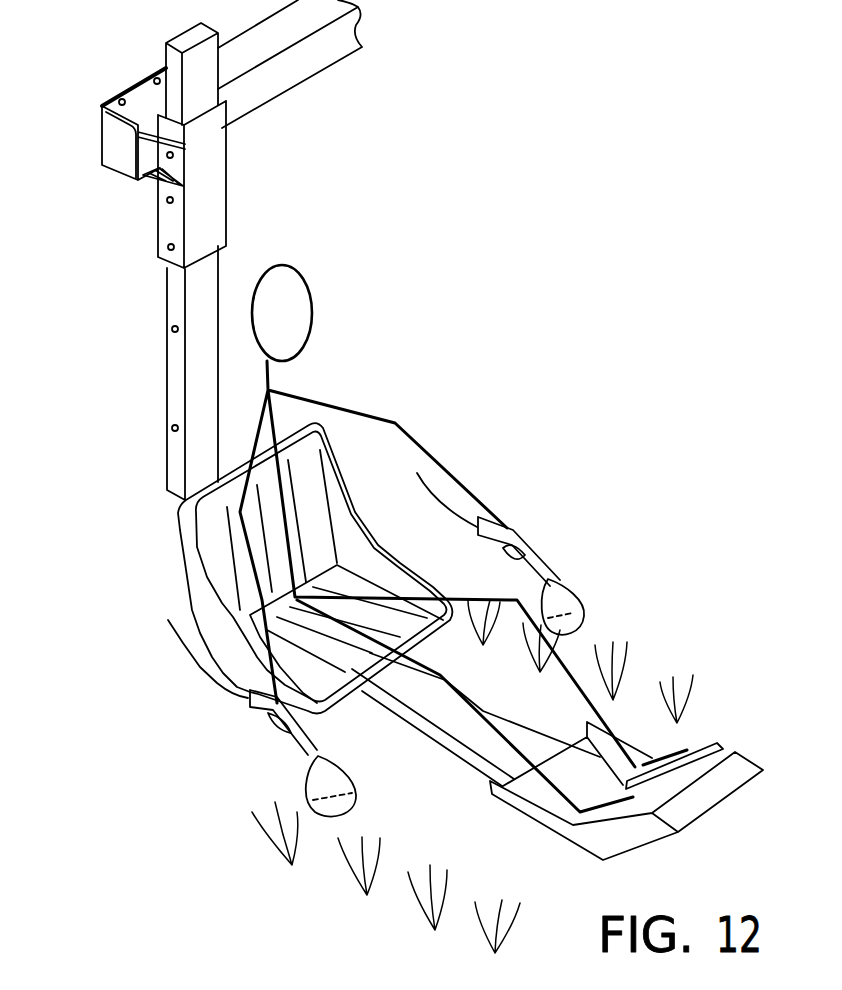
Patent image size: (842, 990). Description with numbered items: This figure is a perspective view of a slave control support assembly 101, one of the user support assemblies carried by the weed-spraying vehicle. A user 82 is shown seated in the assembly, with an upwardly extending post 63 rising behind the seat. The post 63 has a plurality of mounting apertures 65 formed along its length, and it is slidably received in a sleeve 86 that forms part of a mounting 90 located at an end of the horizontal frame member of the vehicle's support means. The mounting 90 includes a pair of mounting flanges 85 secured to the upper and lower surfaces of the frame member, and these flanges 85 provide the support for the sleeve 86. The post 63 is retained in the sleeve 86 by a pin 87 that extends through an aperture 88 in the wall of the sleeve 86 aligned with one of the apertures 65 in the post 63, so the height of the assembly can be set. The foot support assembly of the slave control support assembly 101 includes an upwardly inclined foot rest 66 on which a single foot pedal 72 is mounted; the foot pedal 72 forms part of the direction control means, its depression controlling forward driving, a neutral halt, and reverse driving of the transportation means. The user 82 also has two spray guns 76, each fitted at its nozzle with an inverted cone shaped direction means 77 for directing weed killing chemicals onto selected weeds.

The upwardly extending post 63 is at (152, 372).
The mounting apertures 65 is at (173, 331).
The foot rest 66 is at (641, 780).
The foot pedal 72 is at (710, 748).
The spray gun 76 is at (547, 547).
The inverted cone shaped direction means 77 is at (577, 590).
The user 82 is at (312, 327).
The mounting flange 85 is at (138, 91).
The sleeve 86 is at (219, 203).
The pin 87 is at (174, 155).
The aperture 88 is at (171, 250).
The mounting 90 is at (264, 134).
The slave control support assembly 101 is at (632, 402).